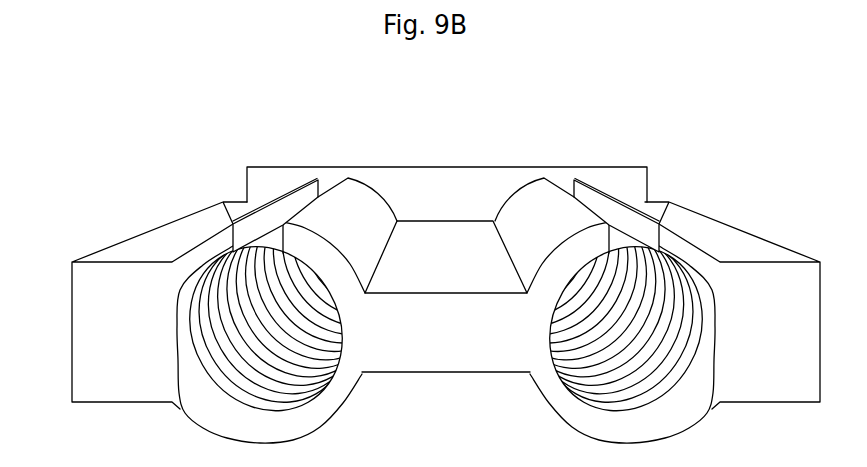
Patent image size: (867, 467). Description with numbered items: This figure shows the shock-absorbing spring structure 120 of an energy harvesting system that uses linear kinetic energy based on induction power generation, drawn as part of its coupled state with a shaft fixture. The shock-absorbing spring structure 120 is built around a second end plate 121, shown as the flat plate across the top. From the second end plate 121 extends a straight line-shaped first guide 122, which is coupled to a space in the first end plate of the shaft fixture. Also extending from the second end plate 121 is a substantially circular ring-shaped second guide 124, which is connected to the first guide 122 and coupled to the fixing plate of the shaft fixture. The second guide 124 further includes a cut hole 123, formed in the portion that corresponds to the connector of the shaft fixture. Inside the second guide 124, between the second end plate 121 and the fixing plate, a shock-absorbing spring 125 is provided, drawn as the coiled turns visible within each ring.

The shock-absorbing spring structure 120 is at (750, 140).
The second end plate 121 is at (475, 182).
The first guide 122 is at (72, 311).
The cut hole 123 is at (290, 209).
The second guide 124 is at (375, 204).
The shock-absorbing spring 125 is at (217, 272).